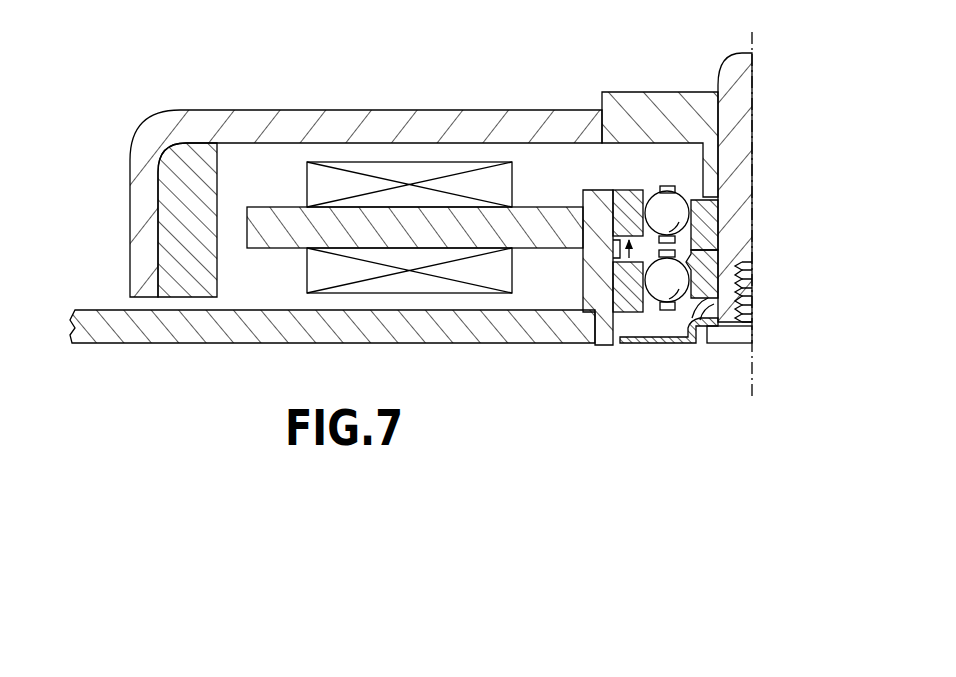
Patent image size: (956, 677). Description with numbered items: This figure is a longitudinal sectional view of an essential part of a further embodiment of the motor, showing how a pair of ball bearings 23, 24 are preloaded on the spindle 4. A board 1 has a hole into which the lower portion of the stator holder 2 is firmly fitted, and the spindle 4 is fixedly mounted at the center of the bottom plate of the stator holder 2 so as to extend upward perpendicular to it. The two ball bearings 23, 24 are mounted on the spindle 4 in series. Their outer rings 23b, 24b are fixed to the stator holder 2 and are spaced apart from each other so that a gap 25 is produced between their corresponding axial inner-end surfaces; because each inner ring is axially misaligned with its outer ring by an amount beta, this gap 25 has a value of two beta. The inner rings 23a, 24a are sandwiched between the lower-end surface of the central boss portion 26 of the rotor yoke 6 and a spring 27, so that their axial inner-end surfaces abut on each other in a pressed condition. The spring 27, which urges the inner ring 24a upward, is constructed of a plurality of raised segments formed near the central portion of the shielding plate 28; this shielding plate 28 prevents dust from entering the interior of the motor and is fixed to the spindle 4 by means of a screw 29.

The board 1 is at (195, 335).
The stator holder 2 is at (590, 200).
The spindle 4 is at (739, 58).
The rotor yoke 6 is at (380, 108).
The ball bearing 23 is at (657, 181).
The inner ring 23a is at (722, 208).
The outer ring 23b is at (624, 190).
The ball bearing 24 is at (663, 322).
The inner ring 24a is at (722, 268).
The outer ring 24b is at (630, 312).
The gap 25 is at (612, 265).
The central boss portion 26 is at (700, 105).
The spring 27 is at (709, 345).
The shielding plate 28 is at (675, 343).
The screw 29 is at (746, 327).